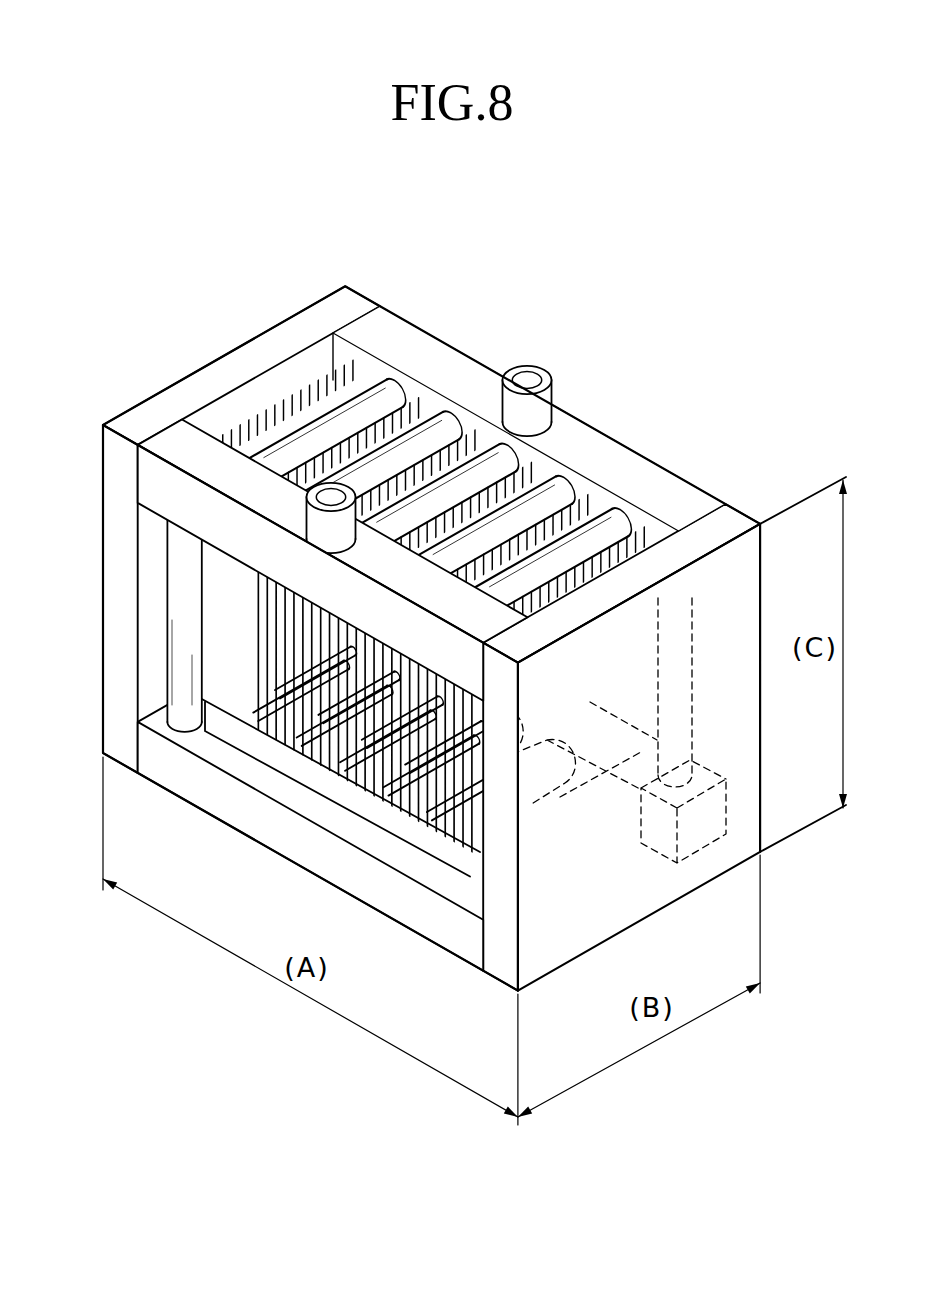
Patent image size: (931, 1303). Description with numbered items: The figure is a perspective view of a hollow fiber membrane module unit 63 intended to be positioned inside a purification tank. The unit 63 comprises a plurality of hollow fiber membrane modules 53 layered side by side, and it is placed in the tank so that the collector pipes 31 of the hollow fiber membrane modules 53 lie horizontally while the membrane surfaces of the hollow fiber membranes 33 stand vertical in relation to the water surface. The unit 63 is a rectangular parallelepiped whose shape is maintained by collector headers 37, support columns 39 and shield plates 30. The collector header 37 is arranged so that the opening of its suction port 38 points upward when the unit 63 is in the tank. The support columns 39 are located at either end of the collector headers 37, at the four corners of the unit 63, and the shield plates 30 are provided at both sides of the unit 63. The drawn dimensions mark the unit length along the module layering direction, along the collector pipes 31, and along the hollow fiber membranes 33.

The hollow fiber membrane module unit 63 is at (183, 253).
The shield plate 30 is at (117, 548).
The collector pipe 31 is at (340, 410).
The hollow fiber membrane 33 is at (253, 667).
The collector header 37 is at (175, 440).
The suction port 38 is at (540, 372).
The support column 39 is at (175, 668).
The hollow fiber membrane module 53 is at (404, 370).